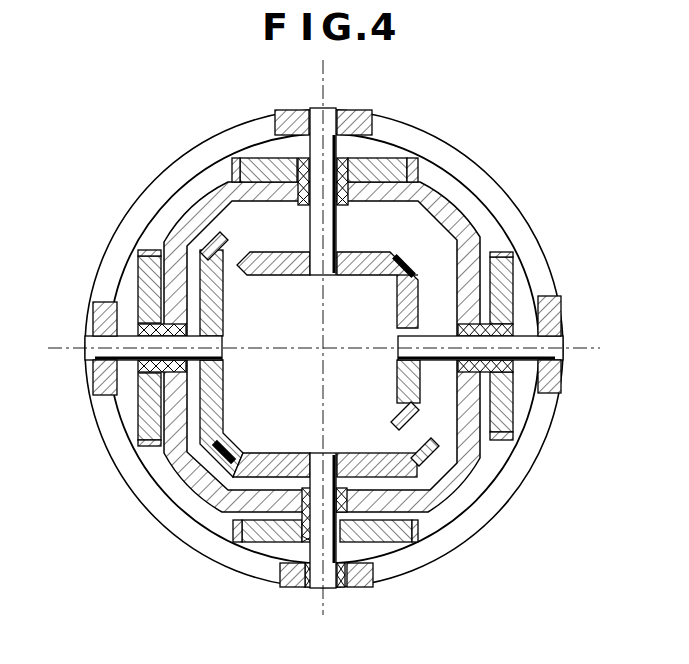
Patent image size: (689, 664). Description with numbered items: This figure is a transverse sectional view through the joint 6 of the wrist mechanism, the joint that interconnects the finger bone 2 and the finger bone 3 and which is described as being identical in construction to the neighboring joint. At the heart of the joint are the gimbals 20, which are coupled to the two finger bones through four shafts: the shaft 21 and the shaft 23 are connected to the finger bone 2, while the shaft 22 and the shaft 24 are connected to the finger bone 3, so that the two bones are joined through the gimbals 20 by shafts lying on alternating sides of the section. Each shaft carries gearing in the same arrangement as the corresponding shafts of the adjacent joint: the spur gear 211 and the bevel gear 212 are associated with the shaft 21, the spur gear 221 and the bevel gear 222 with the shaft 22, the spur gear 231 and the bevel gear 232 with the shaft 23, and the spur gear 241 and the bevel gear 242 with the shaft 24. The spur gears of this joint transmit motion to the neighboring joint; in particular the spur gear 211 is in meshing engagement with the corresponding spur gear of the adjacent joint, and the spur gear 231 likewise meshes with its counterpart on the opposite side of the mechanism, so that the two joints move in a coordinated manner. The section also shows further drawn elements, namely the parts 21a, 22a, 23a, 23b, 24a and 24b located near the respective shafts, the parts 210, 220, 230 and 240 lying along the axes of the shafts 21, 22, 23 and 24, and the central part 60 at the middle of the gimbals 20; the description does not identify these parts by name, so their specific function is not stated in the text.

The finger bone 2 is at (93, 384).
The finger bone 3 is at (386, 114).
The joint 6 is at (492, 220).
The gimbals 20 is at (188, 213).
The shaft 21 is at (161, 362).
The coil of first unit 21a is at (126, 312).
The shaft of first unit 210 is at (65, 348).
The spur gear 211 is at (140, 447).
The bevel gear 212 is at (221, 388).
The shaft 22 is at (379, 191).
The coil of second unit 22a is at (343, 192).
The shaft of second unit 220 is at (328, 95).
The spur gear 221 is at (427, 168).
The bevel gear 222 is at (283, 270).
The shaft 23 is at (486, 335).
The coil of third unit 23a is at (522, 330).
The coil bobbin of third unit 23b is at (527, 272).
The shaft of third unit 230 is at (565, 348).
The spur gear 231 is at (510, 420).
The bevel gear 232 is at (400, 372).
The shaft 24 is at (329, 532).
The coil of fourth unit 24a is at (305, 582).
The pole piece of fourth unit 24b is at (349, 468).
The shaft of fourth unit 240 is at (331, 600).
The spur gear 241 is at (240, 546).
The bevel gear 242 is at (268, 468).
The central member 60 is at (323, 349).